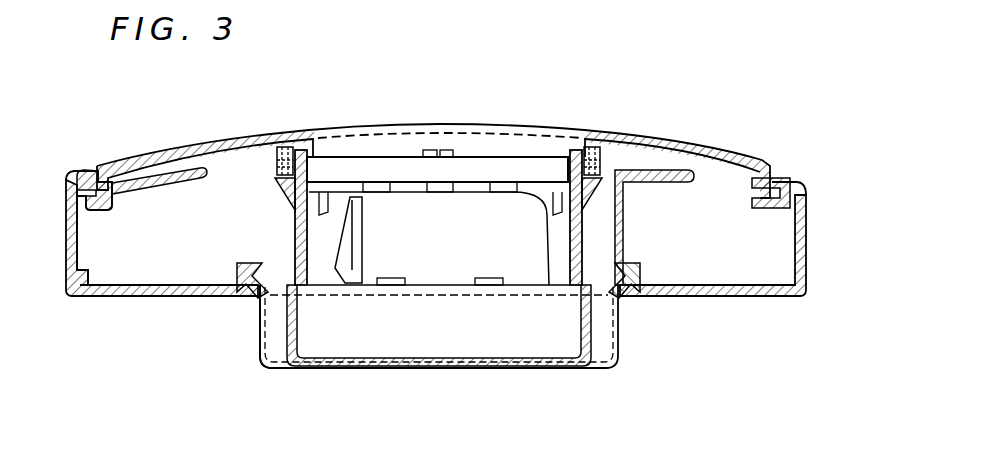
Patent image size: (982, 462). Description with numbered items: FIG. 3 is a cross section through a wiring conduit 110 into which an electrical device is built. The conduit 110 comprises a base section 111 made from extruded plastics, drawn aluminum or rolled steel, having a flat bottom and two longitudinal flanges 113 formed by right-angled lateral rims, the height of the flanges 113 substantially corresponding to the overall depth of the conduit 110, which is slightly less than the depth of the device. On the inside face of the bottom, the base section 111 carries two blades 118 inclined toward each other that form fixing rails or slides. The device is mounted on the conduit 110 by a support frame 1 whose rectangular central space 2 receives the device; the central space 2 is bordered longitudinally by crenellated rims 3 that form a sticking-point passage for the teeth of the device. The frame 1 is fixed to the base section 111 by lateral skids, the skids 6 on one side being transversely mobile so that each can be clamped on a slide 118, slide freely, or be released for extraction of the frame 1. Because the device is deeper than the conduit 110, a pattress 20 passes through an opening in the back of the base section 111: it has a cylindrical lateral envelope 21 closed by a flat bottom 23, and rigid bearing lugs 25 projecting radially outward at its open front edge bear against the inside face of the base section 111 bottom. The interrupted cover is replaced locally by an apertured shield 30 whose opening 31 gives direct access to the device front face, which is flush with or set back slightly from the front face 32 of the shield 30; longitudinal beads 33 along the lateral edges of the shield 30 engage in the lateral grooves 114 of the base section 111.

The support frame 1 is at (290, 221).
The central space 2 is at (464, 214).
The crenellated rim 3 is at (545, 206).
The skid 6 is at (364, 229).
The pattress 20 is at (551, 377).
The cylindrical lateral envelope 21 is at (262, 331).
The bottom 23 is at (383, 360).
The bearing lug 25 is at (587, 285).
The shield 30 is at (656, 132).
The opening 31 is at (337, 137).
The front face 32 is at (130, 146).
The longitudinal bead 33 is at (806, 179).
The wiring conduit 110 is at (155, 298).
The base section 111 is at (96, 299).
The longitudinal flange 113 is at (793, 243).
The lateral groove 114 is at (92, 173).
The blade 118 is at (572, 280).